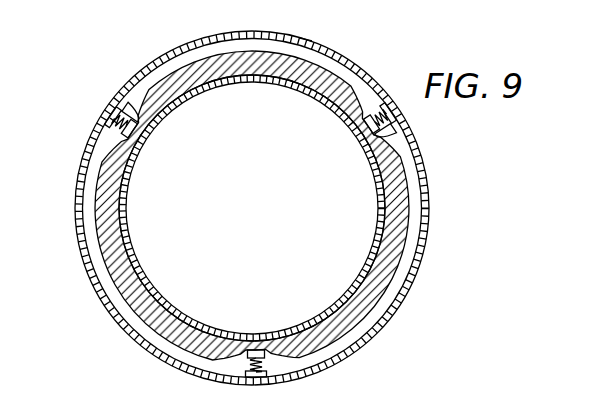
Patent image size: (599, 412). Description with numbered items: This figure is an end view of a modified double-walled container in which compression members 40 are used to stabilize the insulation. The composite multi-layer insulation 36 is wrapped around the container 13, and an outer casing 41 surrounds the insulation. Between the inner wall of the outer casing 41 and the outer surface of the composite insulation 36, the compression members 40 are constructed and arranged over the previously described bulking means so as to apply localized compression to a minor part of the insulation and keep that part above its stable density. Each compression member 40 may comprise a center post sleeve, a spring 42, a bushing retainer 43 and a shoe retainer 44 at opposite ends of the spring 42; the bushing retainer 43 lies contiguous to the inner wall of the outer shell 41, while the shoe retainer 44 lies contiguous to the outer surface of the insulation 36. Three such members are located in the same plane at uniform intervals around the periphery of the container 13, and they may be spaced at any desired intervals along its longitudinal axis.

The container 13 is at (235, 78).
The composite multi-layer insulation 36 is at (179, 70).
The compression member 40 is at (88, 145).
The outer casing 41 is at (308, 39).
The spring 42 is at (130, 99).
The bushing retainer 43 is at (110, 130).
The shoe retainer 44 is at (131, 127).